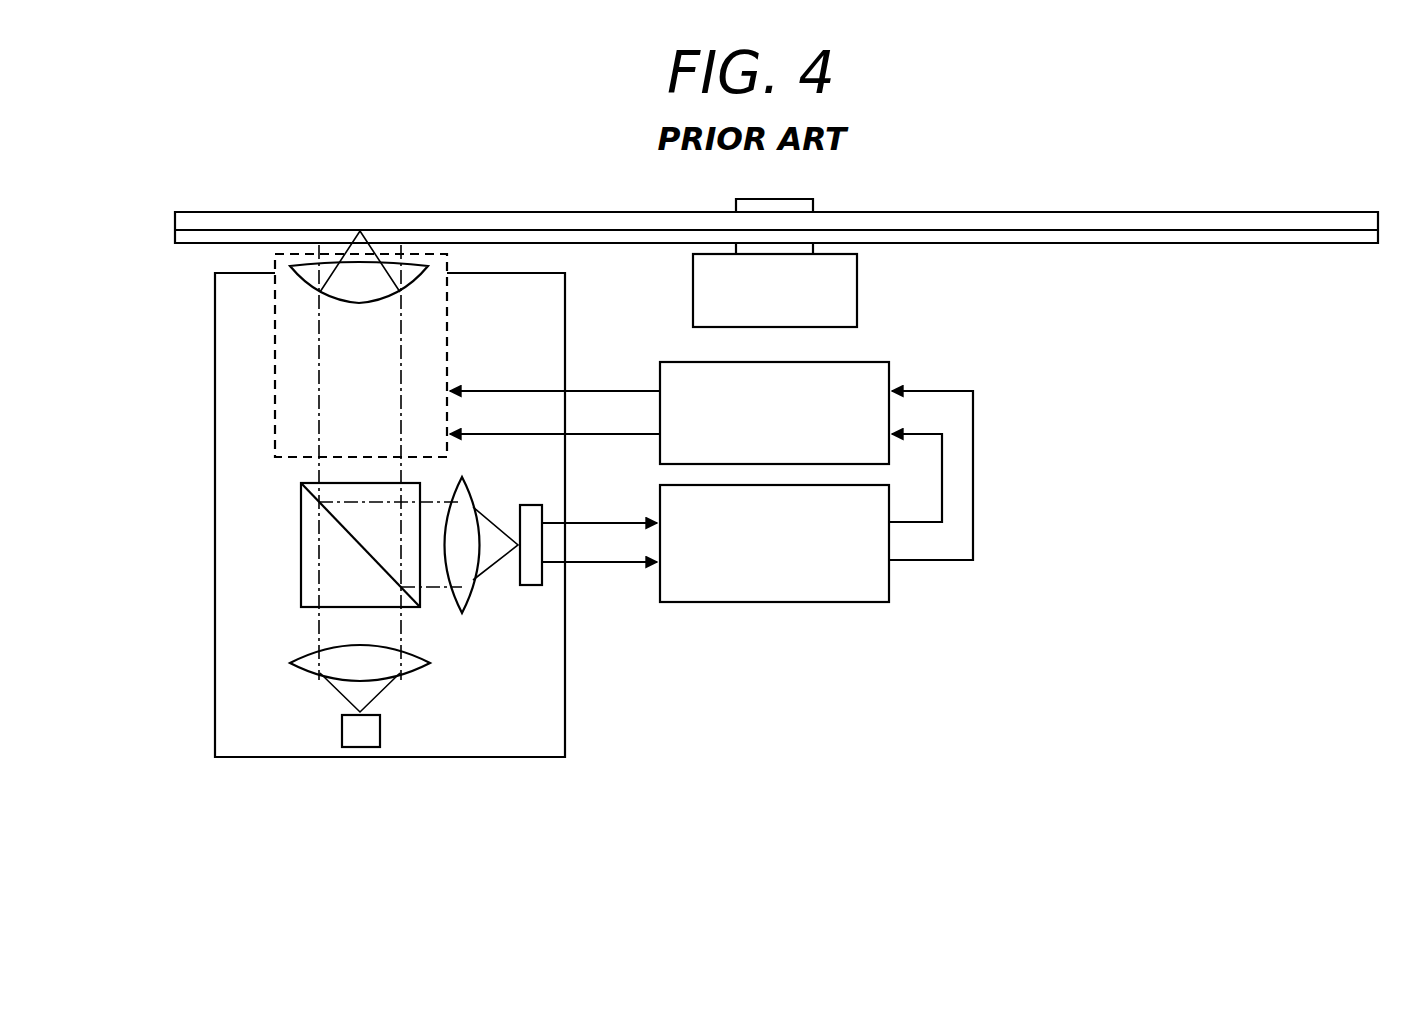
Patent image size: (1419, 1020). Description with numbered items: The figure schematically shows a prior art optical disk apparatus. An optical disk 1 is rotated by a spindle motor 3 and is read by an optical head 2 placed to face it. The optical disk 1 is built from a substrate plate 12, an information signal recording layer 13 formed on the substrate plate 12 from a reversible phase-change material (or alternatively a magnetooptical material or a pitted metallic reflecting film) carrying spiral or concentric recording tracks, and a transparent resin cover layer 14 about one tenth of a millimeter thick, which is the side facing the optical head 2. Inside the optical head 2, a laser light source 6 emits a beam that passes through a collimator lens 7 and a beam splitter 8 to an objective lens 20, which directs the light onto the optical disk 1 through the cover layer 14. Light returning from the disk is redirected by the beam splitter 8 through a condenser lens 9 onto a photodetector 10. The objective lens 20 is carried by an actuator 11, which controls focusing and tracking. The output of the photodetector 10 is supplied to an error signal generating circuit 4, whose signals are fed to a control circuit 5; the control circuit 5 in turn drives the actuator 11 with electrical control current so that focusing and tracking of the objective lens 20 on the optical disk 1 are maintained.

The optical disk 1 is at (776, 216).
The optical head 2 is at (258, 758).
The spindle motor 3 is at (700, 288).
The error signal generating circuit 4 is at (840, 603).
The control circuit 5 is at (893, 368).
The laser light source 6 is at (363, 738).
The collimator lens 7 is at (303, 669).
The beam splitter 8 is at (307, 556).
The condenser lens 9 is at (468, 603).
The photodetector 10 is at (537, 585).
The actuator 11 is at (273, 418).
The substrate plate 12 is at (1100, 215).
The information signal recording layer 13 is at (1185, 232).
The cover layer 14 is at (1080, 238).
The objective lens 20 is at (305, 289).